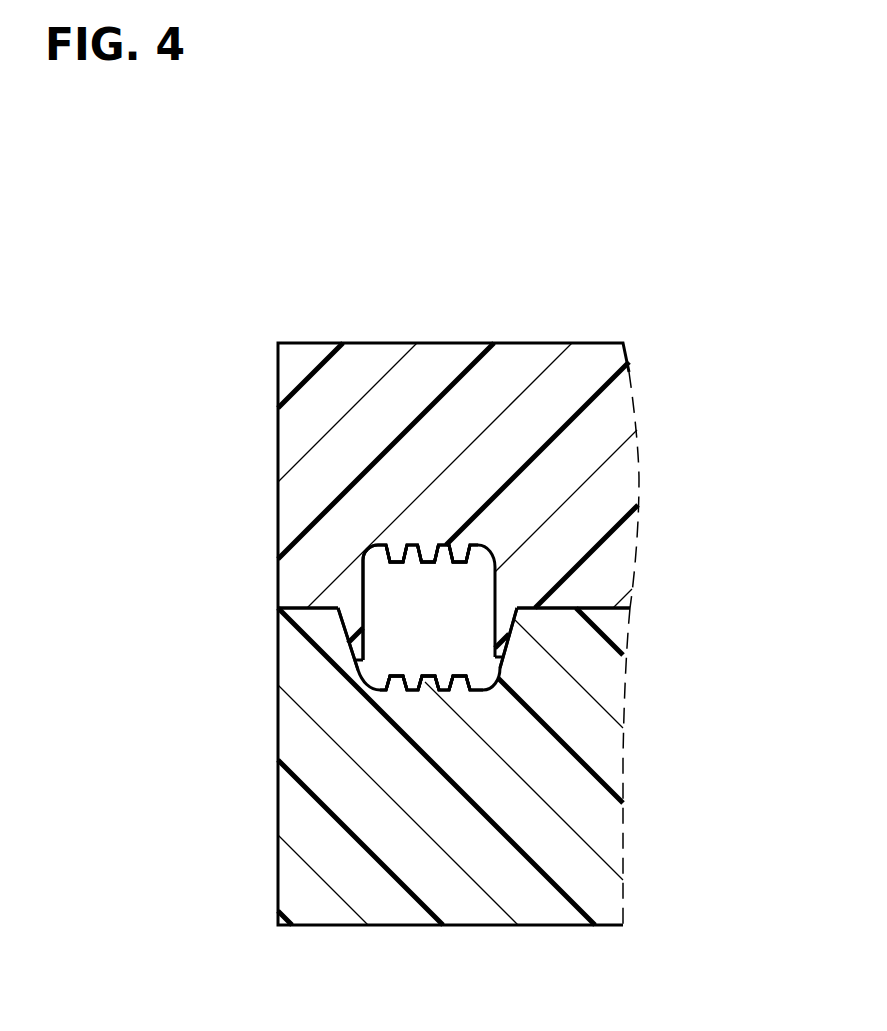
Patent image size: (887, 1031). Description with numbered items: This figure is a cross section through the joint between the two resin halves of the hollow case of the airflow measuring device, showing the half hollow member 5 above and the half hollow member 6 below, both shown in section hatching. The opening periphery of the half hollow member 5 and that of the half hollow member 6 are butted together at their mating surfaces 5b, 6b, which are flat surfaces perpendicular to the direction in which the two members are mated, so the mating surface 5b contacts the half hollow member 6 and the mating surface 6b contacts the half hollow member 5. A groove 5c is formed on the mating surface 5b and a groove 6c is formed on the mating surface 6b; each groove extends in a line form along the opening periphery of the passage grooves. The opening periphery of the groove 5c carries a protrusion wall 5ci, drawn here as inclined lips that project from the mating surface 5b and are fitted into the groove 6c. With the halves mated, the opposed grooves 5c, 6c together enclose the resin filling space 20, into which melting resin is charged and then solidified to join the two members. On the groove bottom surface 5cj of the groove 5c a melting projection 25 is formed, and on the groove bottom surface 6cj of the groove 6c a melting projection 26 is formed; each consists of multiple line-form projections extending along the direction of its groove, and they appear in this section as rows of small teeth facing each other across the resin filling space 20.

The half hollow member 5 is at (535, 343).
The half hollow member 6 is at (532, 926).
The mating surface 5b is at (323, 610).
The mating surface 6b is at (301, 608).
The groove 5c is at (468, 580).
The groove 6c is at (397, 662).
The groove bottom surface 5cj is at (478, 543).
The groove bottom surface 6cj is at (428, 675).
The protrusion wall 5ci is at (502, 625).
The resin filling space 20 is at (384, 570).
The melting projection 25 is at (394, 543).
The melting projection 26 is at (462, 685).